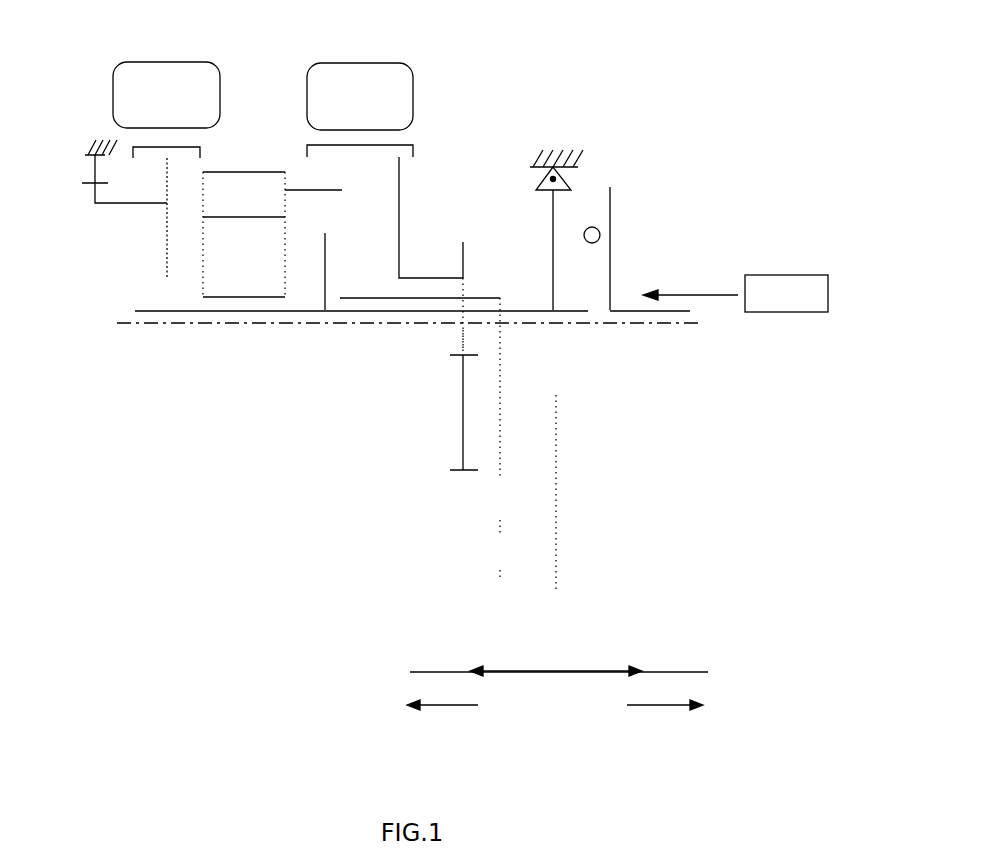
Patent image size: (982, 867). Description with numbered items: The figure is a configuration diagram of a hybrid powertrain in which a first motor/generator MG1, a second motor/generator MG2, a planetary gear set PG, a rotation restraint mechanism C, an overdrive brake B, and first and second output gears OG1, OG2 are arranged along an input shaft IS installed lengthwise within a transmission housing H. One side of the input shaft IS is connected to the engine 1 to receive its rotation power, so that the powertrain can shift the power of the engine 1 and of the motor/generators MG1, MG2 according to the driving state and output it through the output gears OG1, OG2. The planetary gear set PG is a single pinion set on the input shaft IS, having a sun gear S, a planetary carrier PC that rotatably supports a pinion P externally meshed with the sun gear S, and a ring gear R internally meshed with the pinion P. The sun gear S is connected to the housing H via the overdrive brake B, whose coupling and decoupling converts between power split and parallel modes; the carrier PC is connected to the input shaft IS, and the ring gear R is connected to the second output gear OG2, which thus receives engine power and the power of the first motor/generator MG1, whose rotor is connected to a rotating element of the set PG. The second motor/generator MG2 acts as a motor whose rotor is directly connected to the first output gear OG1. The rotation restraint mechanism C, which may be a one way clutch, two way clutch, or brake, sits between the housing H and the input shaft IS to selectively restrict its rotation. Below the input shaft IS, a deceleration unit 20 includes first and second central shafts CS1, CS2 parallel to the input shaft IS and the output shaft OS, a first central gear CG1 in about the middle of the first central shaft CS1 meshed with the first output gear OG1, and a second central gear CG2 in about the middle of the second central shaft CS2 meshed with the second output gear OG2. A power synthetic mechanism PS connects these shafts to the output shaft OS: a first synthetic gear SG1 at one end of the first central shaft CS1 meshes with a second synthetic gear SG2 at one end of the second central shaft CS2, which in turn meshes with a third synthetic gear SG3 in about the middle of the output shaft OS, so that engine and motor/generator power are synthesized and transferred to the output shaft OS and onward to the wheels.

The engine 1 is at (787, 273).
The first motor/generator MG1 is at (167, 62).
The second motor/generator MG2 is at (358, 62).
The planetary gear set PG is at (254, 147).
The ring gear R is at (272, 186).
The pinion P is at (244, 231).
The sun gear S is at (244, 283).
The planetary carrier PC is at (305, 233).
The transmission housing H is at (92, 133).
The overdrive brake B is at (83, 173).
The rotation restraint mechanism C is at (565, 178).
The input shaft IS is at (152, 310).
The first output gear OG1 is at (462, 260).
The second output gear OG2 is at (500, 200).
The first central gear CG1 is at (462, 385).
The second central gear CG2 is at (500, 555).
The first central shaft CS1 is at (433, 413).
The second central shaft CS2 is at (443, 527).
The deceleration unit 20 is at (398, 480).
The first synthetic gear SG1 is at (557, 407).
The second synthetic gear SG2 is at (557, 520).
The third synthetic gear SG3 is at (555, 628).
The power synthetic mechanism PS is at (600, 460).
The output shaft OS is at (442, 672).